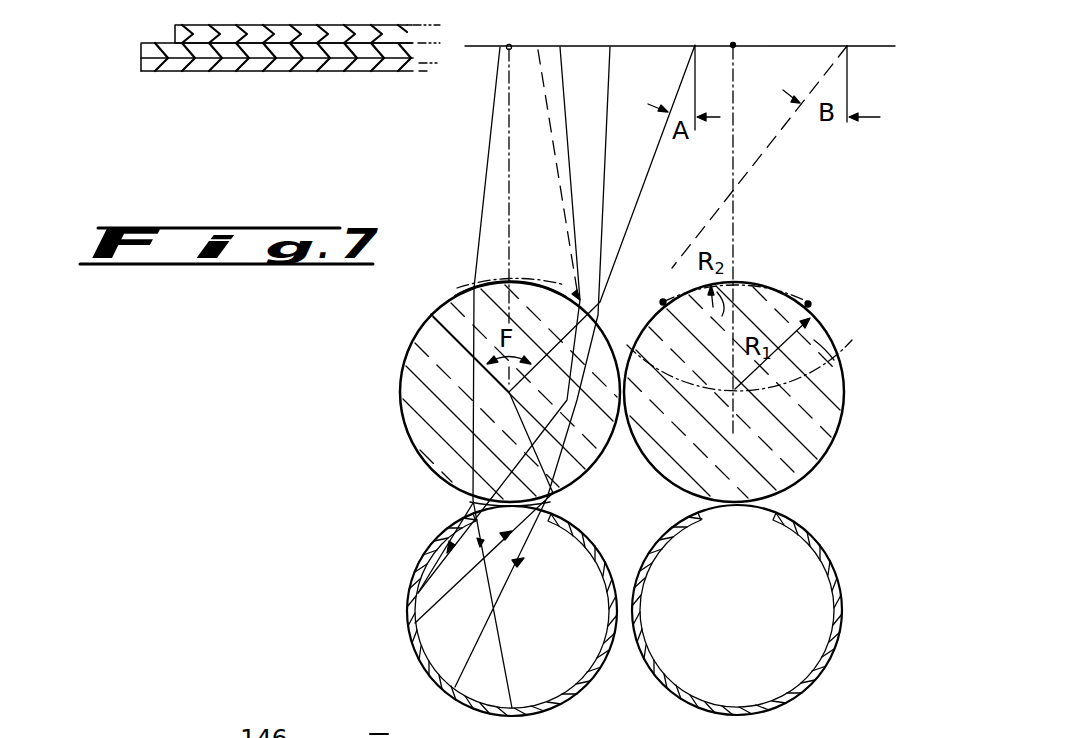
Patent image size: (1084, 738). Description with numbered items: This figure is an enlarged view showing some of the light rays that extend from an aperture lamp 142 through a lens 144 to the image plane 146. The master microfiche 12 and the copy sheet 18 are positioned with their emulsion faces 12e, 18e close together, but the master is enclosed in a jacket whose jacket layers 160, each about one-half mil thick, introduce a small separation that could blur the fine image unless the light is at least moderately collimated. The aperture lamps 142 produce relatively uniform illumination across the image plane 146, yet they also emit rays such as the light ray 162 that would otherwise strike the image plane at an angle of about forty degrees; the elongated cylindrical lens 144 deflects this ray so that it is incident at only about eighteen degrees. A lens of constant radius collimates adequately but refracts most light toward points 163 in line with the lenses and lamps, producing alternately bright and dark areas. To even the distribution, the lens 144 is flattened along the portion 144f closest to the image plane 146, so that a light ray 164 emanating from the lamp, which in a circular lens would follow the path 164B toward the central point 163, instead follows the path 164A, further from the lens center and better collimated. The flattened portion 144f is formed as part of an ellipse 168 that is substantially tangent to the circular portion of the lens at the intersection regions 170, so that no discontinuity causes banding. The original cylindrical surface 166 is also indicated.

The jacket layers 160 is at (141, 44).
The copy sheet 18 is at (277, 31).
The master microfiche 12 is at (347, 66).
The emulsion face of copy sheet 18e is at (394, 44).
The emulsion face of master microfiche 12e is at (464, 47).
The image plane 146 is at (877, 44).
The points 163 is at (753, 28).
The light ray path 164A is at (562, 76).
The light ray path 164B is at (548, 126).
The light ray 164 is at (535, 540).
The lenses 144 is at (868, 384).
The flattened portion of lens 144f is at (773, 288).
The original cylindrical surface 166 is at (500, 274).
The intersection regions 170 is at (808, 305).
The ellipse 168 is at (838, 350).
The light ray 162 is at (488, 503).
The aperture lamps 142 is at (862, 598).